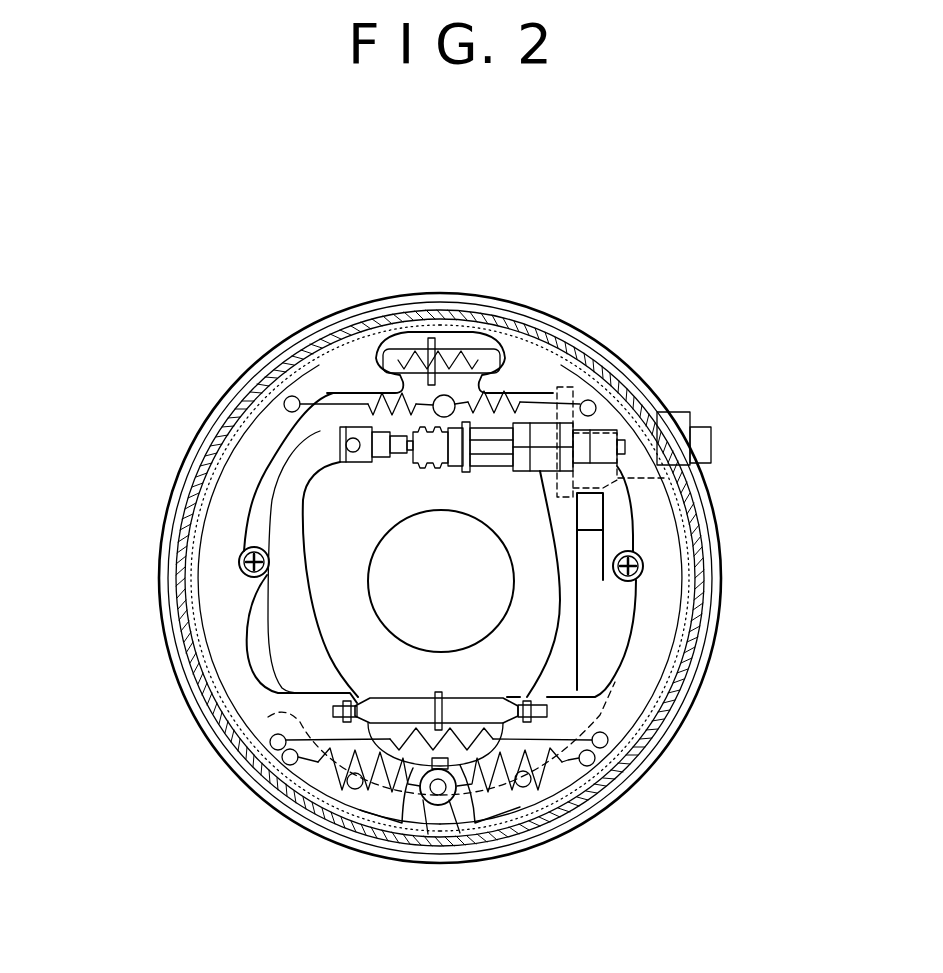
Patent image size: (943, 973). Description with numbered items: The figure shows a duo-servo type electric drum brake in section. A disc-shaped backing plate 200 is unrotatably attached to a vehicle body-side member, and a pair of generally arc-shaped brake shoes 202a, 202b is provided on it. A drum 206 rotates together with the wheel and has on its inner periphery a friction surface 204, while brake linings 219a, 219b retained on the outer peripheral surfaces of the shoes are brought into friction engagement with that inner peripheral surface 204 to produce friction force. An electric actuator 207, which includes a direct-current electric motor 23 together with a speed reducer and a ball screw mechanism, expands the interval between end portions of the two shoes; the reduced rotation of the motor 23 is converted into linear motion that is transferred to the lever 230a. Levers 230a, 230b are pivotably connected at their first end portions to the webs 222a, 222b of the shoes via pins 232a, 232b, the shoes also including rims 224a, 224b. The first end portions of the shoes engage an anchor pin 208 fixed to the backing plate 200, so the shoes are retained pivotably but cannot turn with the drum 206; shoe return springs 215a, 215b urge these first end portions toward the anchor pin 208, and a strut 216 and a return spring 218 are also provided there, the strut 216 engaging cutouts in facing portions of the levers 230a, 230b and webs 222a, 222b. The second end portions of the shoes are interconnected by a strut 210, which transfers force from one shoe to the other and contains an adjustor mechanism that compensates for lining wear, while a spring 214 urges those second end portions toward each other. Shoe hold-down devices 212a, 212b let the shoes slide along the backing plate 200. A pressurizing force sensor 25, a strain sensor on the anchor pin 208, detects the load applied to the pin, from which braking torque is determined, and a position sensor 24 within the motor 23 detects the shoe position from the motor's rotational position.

The backing plate 200 is at (645, 778).
The brake shoe 202a is at (233, 675).
The brake shoe 202b is at (655, 658).
The friction surface 204 is at (695, 583).
The drum 206 is at (698, 570).
The electric actuator 207 is at (408, 428).
The anchor pin 208 is at (420, 848).
The strut 210 is at (458, 354).
The shoe hold-down device 212a is at (241, 551).
The shoe hold-down device 212b is at (646, 552).
The spring 214 is at (535, 412).
The shoe return spring 215a is at (315, 800).
The shoe return spring 215b is at (593, 795).
The strut 216 is at (285, 693).
The return spring 218 is at (620, 764).
The brake lining 219a is at (248, 407).
The brake lining 219b is at (656, 716).
The web 222a is at (220, 642).
The web 222b is at (670, 630).
The rim 224a is at (197, 600).
The rim 224b is at (543, 803).
The direct-current electric motor 23 is at (677, 412).
The position sensor 24 is at (715, 447).
The pressurizing force sensor 25 is at (460, 805).
The lever 230a is at (268, 690).
The lever 230b is at (620, 715).
The pin 232a is at (357, 790).
The pin 232b is at (505, 792).